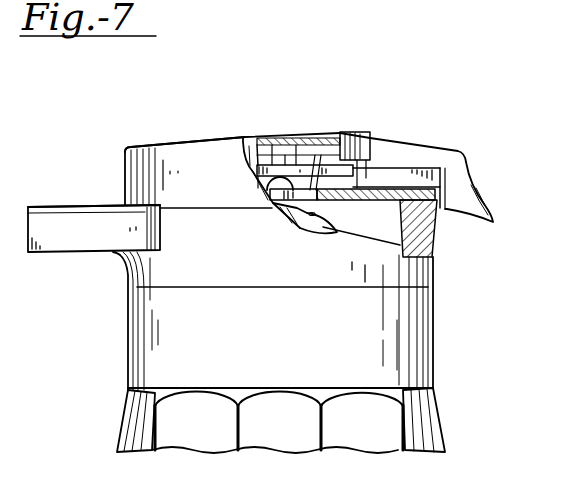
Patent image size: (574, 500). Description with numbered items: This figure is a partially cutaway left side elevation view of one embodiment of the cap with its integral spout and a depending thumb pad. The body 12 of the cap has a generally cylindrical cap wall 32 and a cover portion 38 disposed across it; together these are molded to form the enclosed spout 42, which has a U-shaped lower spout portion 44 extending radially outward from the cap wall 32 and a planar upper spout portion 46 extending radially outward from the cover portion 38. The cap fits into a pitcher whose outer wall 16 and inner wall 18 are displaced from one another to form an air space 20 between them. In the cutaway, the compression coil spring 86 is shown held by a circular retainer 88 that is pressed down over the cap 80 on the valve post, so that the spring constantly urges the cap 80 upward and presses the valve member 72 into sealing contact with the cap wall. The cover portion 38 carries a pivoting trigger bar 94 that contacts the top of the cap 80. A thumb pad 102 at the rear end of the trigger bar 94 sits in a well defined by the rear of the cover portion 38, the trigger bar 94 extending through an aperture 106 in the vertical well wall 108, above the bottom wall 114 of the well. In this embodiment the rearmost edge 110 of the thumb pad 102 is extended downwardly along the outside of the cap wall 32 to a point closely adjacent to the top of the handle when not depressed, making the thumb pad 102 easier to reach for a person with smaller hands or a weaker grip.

The body 12 is at (199, 130).
The cover portion 38 is at (188, 138).
The enclosed spout 42 is at (57, 200).
The upper spout portion 46 is at (85, 205).
The lower spout portion 44 is at (92, 255).
The outer wall 16 is at (123, 420).
The cap wall 32 is at (433, 273).
The compression coil spring 86 is at (313, 213).
The cap 80 is at (257, 153).
The retainer 88 is at (292, 150).
The trigger bar 94 is at (262, 160).
The bottom wall 114 is at (322, 165).
The aperture 106 is at (374, 172).
The vertical well wall 108 is at (398, 175).
The thumb pad 102 is at (422, 142).
The rearmost edge 110 is at (473, 195).
The air space 20 is at (421, 2).
The inner wall 18 is at (492, 11).
The valve member 72 is at (565, 11).